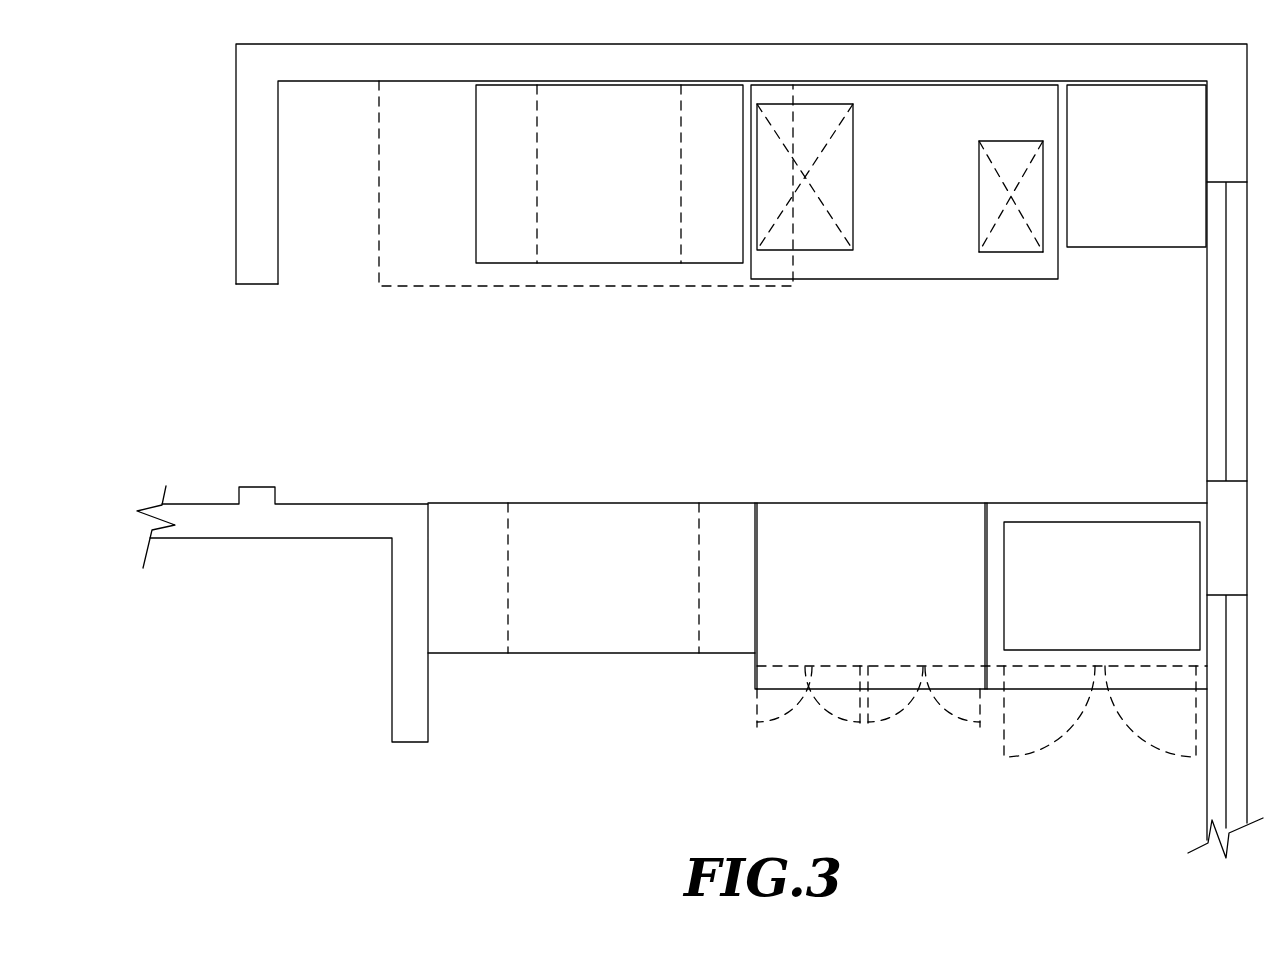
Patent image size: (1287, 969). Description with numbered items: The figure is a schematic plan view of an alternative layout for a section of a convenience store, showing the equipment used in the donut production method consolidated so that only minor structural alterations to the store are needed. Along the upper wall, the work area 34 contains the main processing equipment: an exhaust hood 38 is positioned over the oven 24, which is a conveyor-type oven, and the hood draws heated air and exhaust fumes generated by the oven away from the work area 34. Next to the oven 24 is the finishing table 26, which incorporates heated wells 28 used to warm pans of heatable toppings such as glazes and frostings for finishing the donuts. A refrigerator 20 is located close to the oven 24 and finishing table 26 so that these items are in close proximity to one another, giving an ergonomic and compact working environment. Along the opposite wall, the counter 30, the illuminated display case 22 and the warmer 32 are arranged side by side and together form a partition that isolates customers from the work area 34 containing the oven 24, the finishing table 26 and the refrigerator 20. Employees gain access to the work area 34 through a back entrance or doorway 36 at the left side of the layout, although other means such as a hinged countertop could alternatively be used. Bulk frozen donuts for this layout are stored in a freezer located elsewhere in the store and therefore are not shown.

The refrigerator 20 is at (1125, 178).
The illuminated display case 22 is at (861, 590).
The oven 24 is at (596, 185).
The finishing table 26 is at (898, 205).
The heated wells 28 is at (796, 248).
The counter 30 is at (590, 591).
The warmer 32 is at (1083, 590).
The work area 34 is at (661, 395).
The back entrance or doorway 36 is at (241, 395).
The exhaust hood 38 is at (411, 205).